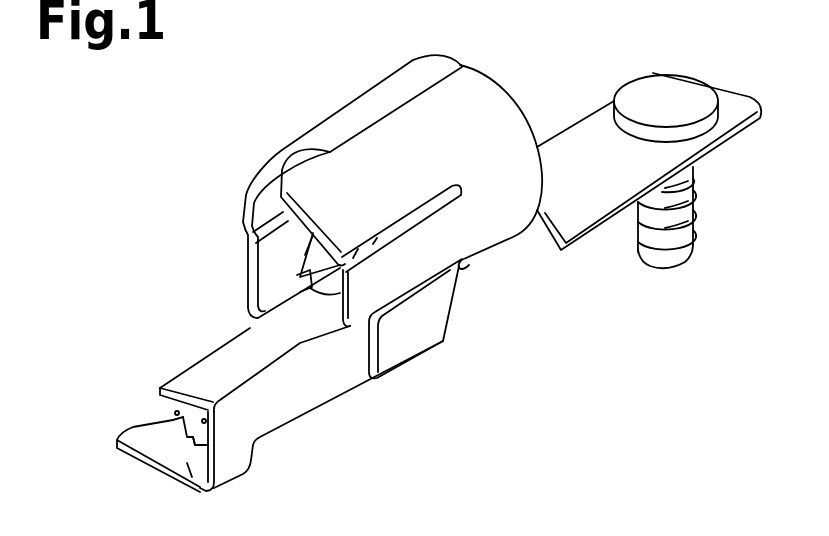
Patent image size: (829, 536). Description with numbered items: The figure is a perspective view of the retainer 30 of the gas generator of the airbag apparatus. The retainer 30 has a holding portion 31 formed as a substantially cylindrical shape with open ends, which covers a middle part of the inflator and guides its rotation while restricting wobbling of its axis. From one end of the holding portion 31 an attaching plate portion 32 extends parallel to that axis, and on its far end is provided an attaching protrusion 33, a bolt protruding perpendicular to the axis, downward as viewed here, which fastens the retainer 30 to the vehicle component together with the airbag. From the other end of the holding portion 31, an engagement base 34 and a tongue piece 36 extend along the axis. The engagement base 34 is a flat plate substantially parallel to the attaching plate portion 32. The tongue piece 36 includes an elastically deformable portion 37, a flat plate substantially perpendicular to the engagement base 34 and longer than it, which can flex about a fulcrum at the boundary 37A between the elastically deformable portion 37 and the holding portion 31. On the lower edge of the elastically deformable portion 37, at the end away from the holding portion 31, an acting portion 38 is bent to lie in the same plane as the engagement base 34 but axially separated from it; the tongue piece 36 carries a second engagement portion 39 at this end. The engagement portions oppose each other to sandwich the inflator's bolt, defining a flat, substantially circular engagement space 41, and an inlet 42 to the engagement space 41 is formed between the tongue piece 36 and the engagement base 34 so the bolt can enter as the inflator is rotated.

The retainer 30 is at (418, 276).
The holding portion 31 is at (346, 108).
The attaching plate portion 32 is at (572, 142).
The attaching protrusion 33 is at (695, 205).
The engagement base 34 is at (237, 358).
The tongue piece 36 is at (317, 440).
The elastically deformable portion 37 is at (253, 438).
The boundary 37A is at (467, 227).
The acting portion 38 is at (230, 484).
The second engagement portion 39 is at (178, 430).
The engagement space 41 is at (203, 420).
The inlet 42 is at (176, 413).